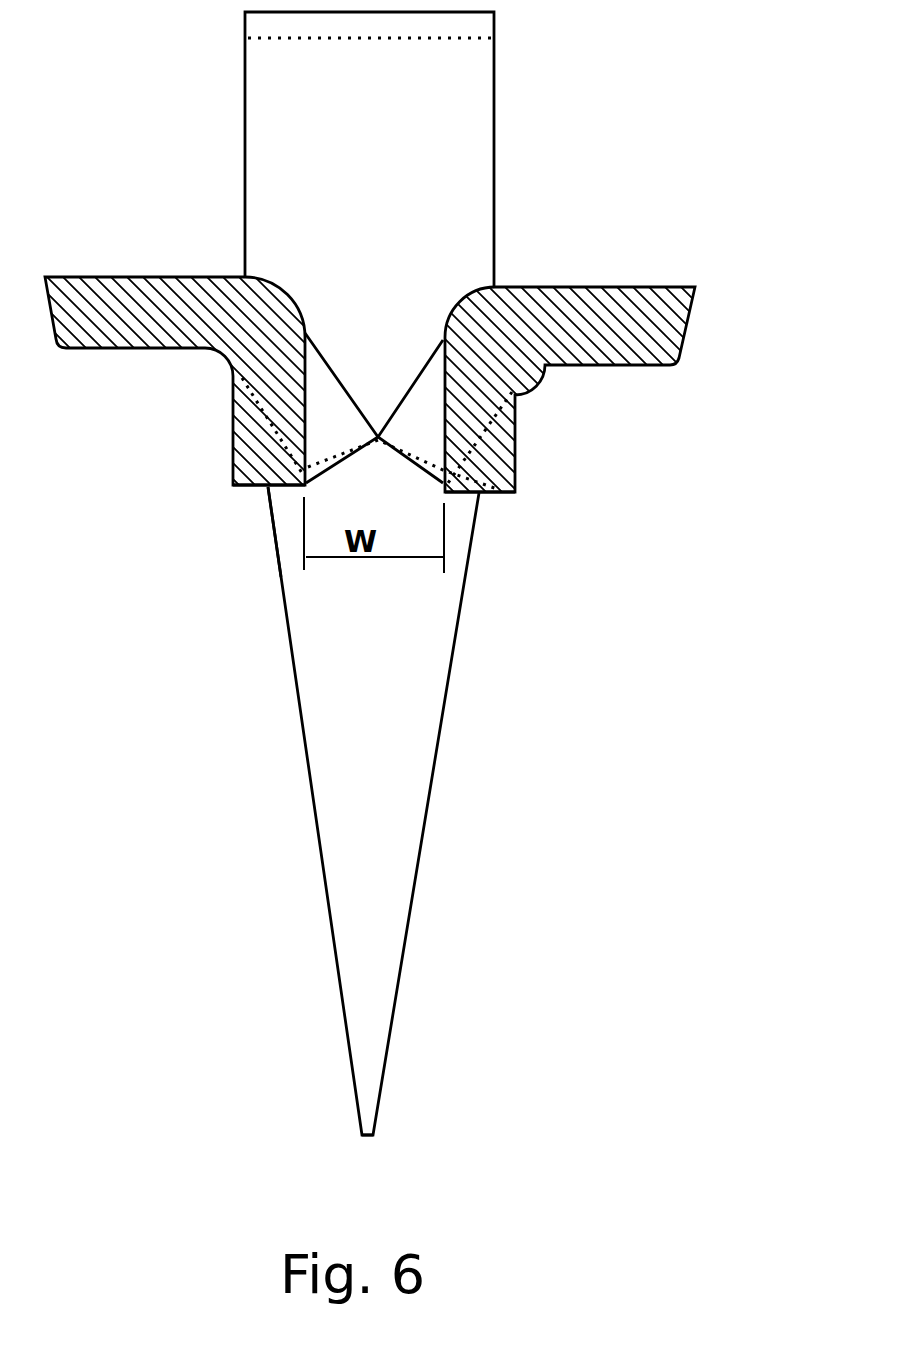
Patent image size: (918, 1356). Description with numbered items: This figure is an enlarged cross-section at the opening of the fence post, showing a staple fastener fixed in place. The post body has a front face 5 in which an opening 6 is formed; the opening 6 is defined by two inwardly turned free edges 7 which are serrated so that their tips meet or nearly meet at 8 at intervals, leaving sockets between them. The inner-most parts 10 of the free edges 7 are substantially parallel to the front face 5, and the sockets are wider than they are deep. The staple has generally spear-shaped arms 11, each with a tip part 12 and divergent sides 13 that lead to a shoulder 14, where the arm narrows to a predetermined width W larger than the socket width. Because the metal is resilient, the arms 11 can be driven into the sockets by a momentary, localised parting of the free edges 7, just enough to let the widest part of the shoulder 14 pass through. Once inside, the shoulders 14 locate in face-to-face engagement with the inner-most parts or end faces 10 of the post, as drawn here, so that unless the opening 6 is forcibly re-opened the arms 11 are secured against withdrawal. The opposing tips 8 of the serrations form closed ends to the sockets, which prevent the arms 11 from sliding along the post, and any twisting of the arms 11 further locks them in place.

The front face 5 is at (542, 287).
The opening 6 is at (385, 492).
The free edges 7 is at (262, 458).
The tips of the free edges 8 is at (462, 495).
The inner-most parts of the edges 10 is at (273, 490).
The arms 11 is at (221, 173).
The tip part 12 is at (362, 1135).
The divergent sides 13 is at (423, 855).
The shoulder 14 is at (253, 425).